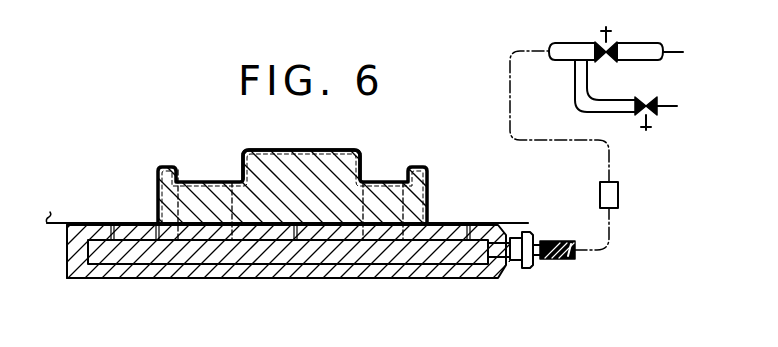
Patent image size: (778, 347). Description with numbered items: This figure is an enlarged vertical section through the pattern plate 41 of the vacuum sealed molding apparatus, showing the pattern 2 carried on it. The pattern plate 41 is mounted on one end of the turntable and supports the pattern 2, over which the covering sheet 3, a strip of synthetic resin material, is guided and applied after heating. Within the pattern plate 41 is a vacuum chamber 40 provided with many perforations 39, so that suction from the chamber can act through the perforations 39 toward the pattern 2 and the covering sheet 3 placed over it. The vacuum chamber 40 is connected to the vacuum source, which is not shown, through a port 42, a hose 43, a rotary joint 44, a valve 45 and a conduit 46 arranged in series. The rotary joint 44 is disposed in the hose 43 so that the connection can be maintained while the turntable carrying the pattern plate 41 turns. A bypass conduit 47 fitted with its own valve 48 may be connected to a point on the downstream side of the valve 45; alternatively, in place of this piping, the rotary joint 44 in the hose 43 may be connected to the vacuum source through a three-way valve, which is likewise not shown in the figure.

The pattern 2 is at (207, 190).
The covering sheet 3 is at (297, 151).
The perforations 39 is at (292, 246).
The vacuum chamber 40 is at (158, 256).
The pattern plate 41 is at (70, 245).
The port 42 is at (496, 268).
The hose 43 is at (562, 260).
The rotary joint 44 is at (616, 204).
The valve 45 is at (606, 27).
The conduit 46 is at (650, 43).
The bypass conduit 47 is at (615, 101).
The valve 48 is at (646, 130).